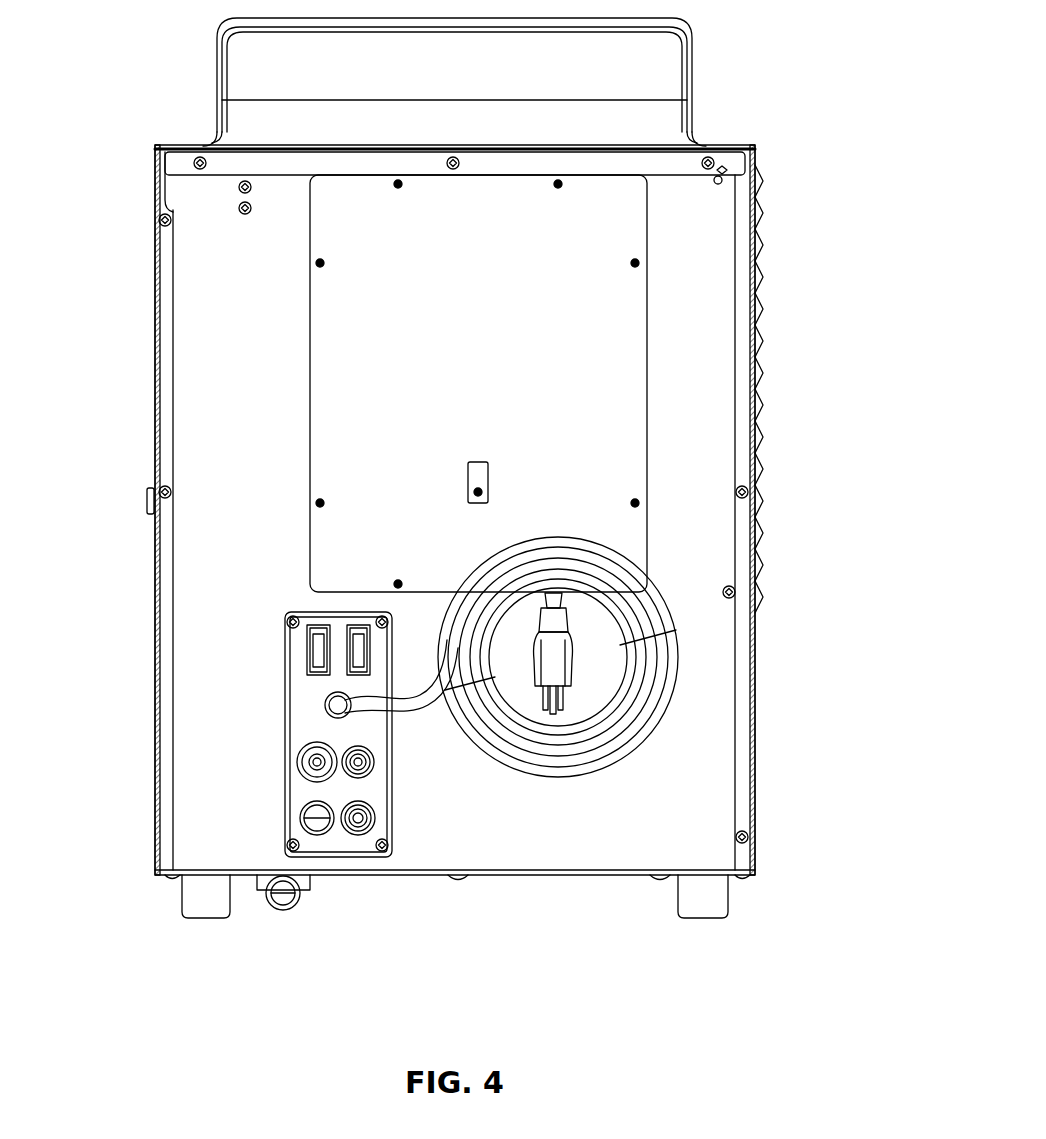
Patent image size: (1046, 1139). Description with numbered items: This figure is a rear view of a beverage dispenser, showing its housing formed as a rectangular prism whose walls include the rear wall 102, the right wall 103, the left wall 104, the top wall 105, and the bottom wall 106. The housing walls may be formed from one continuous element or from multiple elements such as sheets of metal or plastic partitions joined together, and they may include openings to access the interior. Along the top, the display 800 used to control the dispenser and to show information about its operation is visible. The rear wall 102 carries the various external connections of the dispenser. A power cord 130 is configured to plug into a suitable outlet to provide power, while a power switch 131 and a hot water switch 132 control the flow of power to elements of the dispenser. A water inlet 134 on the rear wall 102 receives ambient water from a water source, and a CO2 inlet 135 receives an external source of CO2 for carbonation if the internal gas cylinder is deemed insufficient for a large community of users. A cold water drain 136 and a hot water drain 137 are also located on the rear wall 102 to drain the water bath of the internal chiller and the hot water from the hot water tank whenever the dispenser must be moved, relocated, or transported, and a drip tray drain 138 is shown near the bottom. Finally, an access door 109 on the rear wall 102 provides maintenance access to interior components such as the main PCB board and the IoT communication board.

The display 800 is at (674, 47).
The rear wall 102 is at (712, 783).
The right wall 103 is at (155, 588).
The left wall 104 is at (753, 610).
The top wall 105 is at (722, 147).
The bottom wall 106 is at (570, 873).
The access door 109 is at (627, 245).
The power cord 130 is at (486, 748).
The power switch 131 is at (373, 645).
The hot water switch 132 is at (305, 650).
The water inlet 134 is at (297, 763).
The CO2 inlet 135 is at (373, 762).
The cold water drain 136 is at (373, 813).
The hot water drain 137 is at (303, 817).
The drip tray drain 138 is at (278, 912).